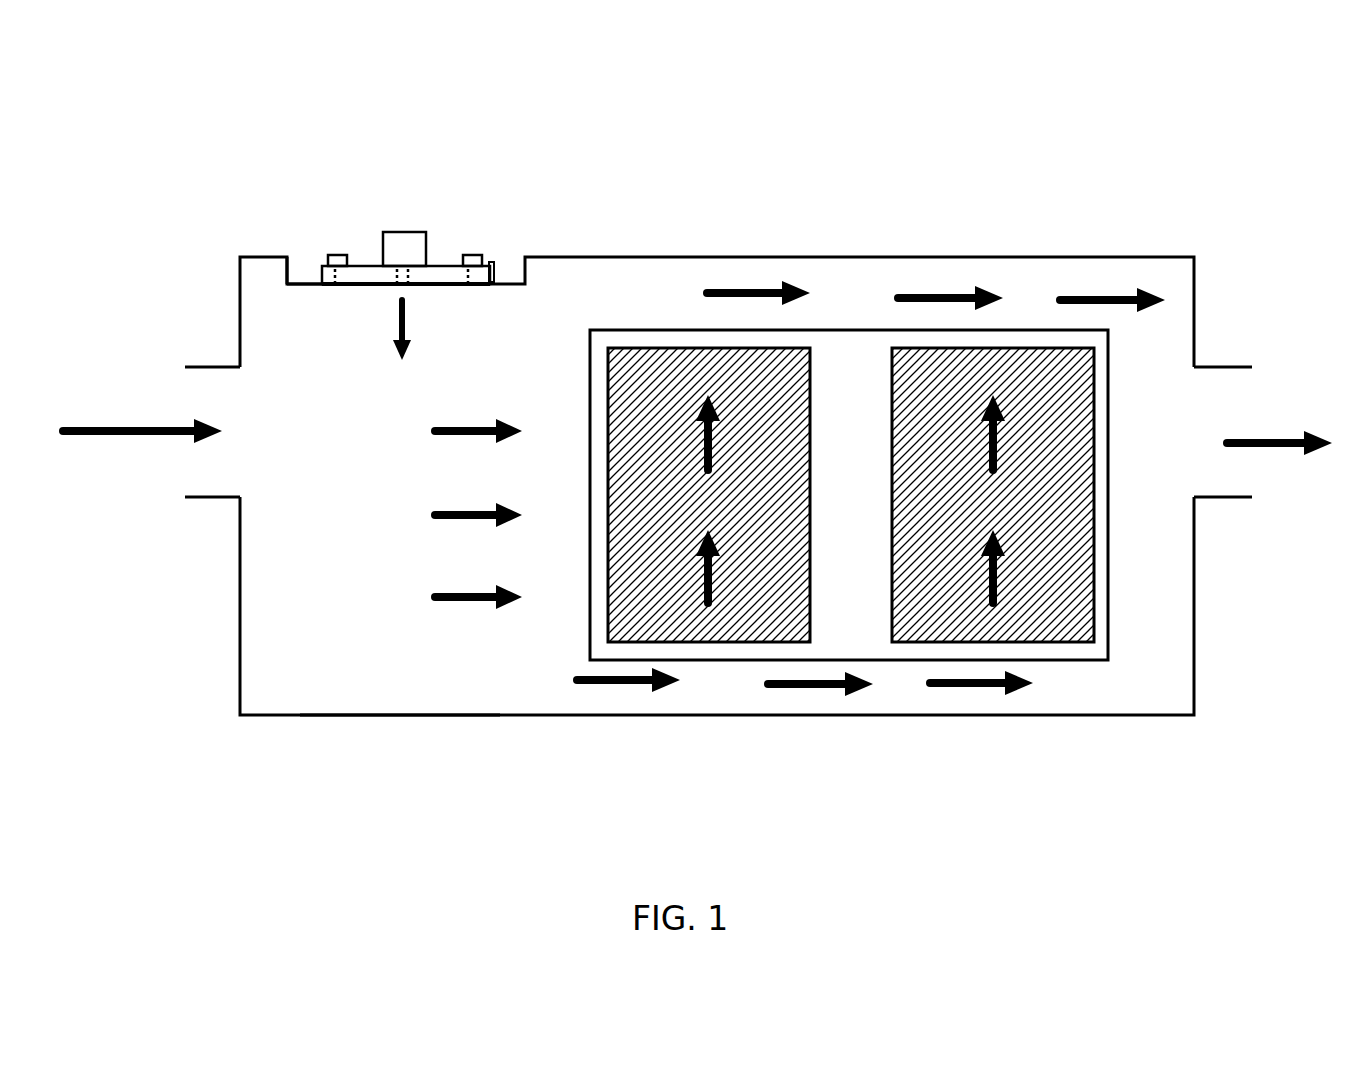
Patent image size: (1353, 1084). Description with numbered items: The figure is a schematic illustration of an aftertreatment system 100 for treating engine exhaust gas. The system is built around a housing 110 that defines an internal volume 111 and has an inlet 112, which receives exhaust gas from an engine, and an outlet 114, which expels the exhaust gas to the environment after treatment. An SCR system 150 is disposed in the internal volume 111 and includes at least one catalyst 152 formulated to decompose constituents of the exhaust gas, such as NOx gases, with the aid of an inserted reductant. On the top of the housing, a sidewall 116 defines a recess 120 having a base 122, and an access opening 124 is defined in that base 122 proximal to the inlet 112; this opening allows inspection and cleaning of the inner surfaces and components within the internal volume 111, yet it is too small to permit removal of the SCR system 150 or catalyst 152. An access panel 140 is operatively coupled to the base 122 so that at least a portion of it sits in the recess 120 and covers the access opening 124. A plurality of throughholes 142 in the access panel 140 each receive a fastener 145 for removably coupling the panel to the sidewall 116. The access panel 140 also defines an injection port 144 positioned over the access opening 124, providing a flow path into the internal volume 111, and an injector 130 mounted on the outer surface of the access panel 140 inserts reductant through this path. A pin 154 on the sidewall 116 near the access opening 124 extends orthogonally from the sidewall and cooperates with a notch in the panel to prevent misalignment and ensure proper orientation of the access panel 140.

The aftertreatment system 100 is at (336, 116).
The housing 110 is at (235, 230).
The internal volume 111 is at (395, 706).
The inlet 112 is at (207, 365).
The outlet 114 is at (1237, 367).
The sidewall 116 is at (280, 257).
The recess 120 is at (302, 260).
The base 122 is at (302, 287).
The access opening 124 is at (372, 287).
The injector 130 is at (405, 238).
The access panel 140 is at (450, 268).
The throughholes 142 is at (338, 287).
The injection port 144 is at (407, 287).
The fastener 145 is at (337, 254).
The SCR system 150 is at (1130, 428).
The catalyst 152 is at (723, 638).
The pin 154 is at (490, 287).